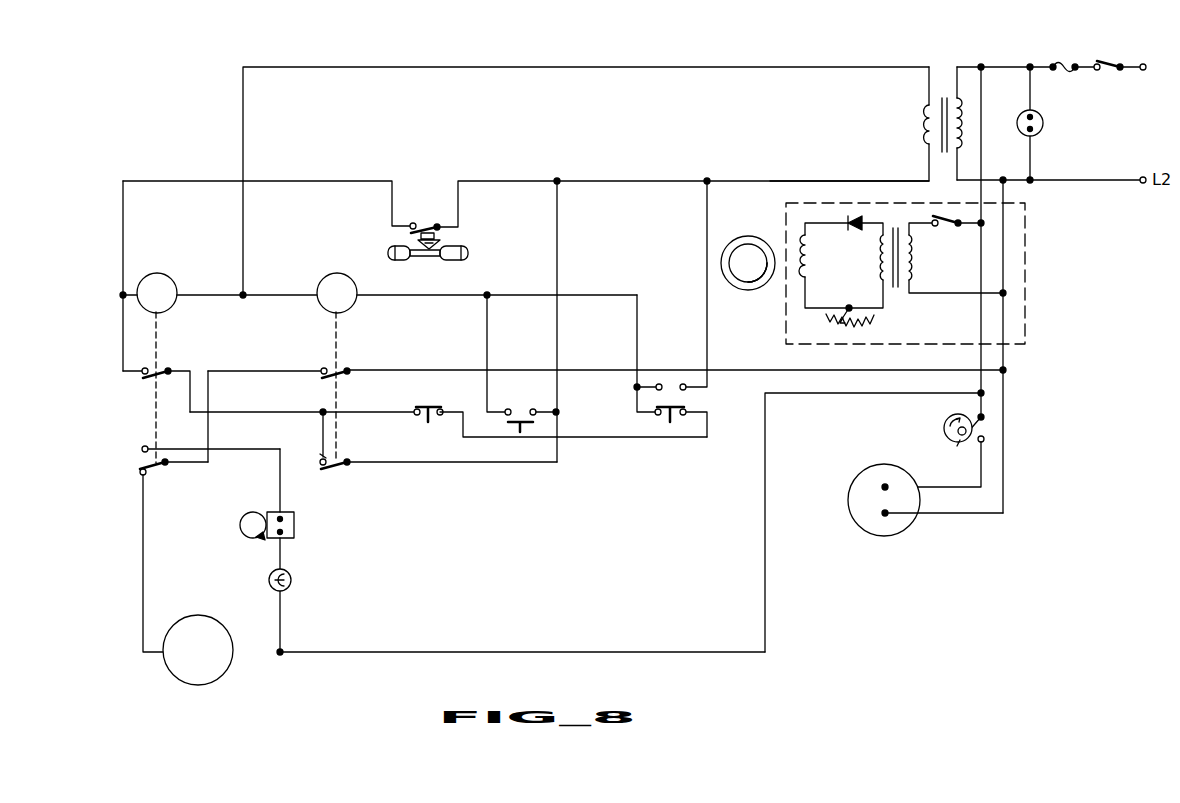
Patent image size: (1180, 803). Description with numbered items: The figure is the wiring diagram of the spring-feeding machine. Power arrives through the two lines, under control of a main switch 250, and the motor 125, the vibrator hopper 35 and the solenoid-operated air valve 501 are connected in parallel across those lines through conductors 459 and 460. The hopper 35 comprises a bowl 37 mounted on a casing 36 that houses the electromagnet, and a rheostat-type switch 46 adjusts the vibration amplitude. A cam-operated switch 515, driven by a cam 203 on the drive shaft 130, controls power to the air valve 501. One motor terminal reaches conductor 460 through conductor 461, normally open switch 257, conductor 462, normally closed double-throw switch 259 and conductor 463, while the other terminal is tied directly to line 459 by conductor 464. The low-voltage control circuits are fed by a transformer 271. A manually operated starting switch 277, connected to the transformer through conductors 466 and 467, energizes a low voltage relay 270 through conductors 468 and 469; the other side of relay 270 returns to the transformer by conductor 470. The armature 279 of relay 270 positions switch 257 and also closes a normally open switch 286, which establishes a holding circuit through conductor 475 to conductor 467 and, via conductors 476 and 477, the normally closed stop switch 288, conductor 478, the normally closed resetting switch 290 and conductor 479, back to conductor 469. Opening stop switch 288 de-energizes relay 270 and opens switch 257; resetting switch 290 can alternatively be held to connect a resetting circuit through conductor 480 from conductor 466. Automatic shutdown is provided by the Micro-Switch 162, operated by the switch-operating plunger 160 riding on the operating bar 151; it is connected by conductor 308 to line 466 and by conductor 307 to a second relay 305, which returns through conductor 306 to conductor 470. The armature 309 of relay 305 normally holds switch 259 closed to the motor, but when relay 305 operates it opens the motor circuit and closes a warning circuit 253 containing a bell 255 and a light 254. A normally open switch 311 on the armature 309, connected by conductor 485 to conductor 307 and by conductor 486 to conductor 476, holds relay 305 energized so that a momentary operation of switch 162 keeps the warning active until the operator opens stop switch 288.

The vibrator hopper 35 is at (947, 347).
The casing 36 is at (1025, 275).
The bowl 37 is at (751, 236).
The rheostat-type switch 46 is at (868, 324).
The motor 125 is at (200, 620).
The drive shaft 130 is at (956, 442).
The operating bar 151 is at (468, 253).
The switch-operating plunger 160 is at (441, 236).
The Micro-Switch 162 is at (427, 230).
The cam 203 is at (946, 421).
The main switch 250 is at (1107, 61).
The warning circuit 253 is at (250, 543).
The light 254 is at (292, 577).
The bell 255 is at (294, 525).
The normally open switch 257 is at (350, 376).
The normally closed switch 259 is at (140, 456).
The low voltage relay 270 is at (338, 284).
The transformer 271 is at (925, 130).
The starting switch 277 is at (525, 424).
The armature 279 is at (340, 335).
The normally open switch 286 is at (338, 470).
The stop switch 288 is at (445, 404).
The resetting switch 290 is at (690, 410).
The second relay 305 is at (168, 282).
The conductor 306 is at (200, 300).
The conductor 307 is at (302, 181).
The conductor 308 is at (491, 181).
The armature 309 is at (150, 352).
The normally open switch 311 is at (148, 377).
The conductor 459 is at (980, 310).
The conductor 460 is at (1003, 398).
The conductor 461 is at (760, 368).
The conductor 462 is at (232, 371).
The conductor 463 is at (143, 533).
The conductor 464 is at (765, 487).
The conductor 466 is at (649, 181).
The conductor 467 is at (557, 248).
The conductor 468 is at (488, 340).
The conductor 469 is at (438, 295).
The conductor 470 is at (243, 128).
The conductor 475 is at (500, 462).
The conductor 476 is at (323, 433).
The conductor 477 is at (365, 414).
The conductor 478 is at (625, 437).
The conductor 479 is at (637, 320).
The conductor 480 is at (707, 338).
The conductor 485 is at (123, 320).
The conductor 486 is at (246, 412).
The solenoid-operated air valve 501 is at (850, 511).
The cam-operated switch 515 is at (990, 425).